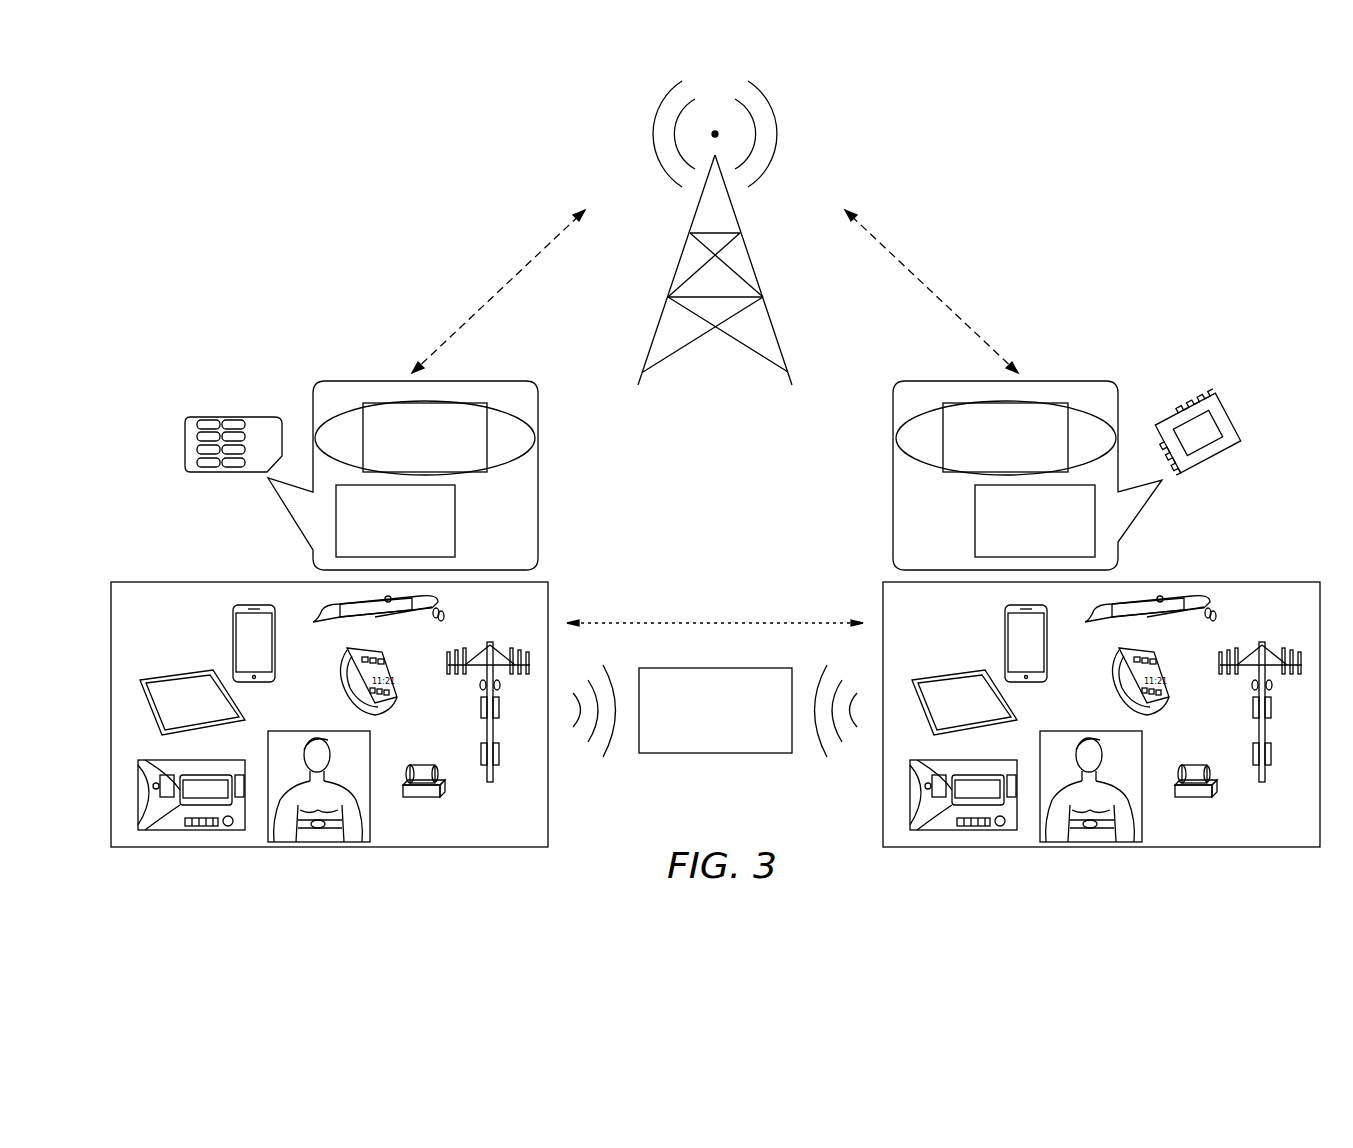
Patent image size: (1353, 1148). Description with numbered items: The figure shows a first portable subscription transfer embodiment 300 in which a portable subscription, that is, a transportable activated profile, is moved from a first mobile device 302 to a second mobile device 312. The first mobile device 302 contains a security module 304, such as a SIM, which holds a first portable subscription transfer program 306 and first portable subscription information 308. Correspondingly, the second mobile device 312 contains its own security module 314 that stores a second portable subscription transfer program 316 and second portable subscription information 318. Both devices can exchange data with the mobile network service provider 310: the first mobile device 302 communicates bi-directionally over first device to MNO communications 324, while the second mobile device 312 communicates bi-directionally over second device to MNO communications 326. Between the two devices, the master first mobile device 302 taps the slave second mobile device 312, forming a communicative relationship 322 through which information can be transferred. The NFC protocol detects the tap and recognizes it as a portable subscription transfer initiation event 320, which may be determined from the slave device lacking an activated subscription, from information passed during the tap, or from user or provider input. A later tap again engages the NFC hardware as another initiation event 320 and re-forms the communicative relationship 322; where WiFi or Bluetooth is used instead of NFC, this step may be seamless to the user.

The first portable subscription transfer embodiment 300 is at (1121, 146).
The first mobile device 302 is at (160, 582).
The security module 304 is at (228, 416).
The first portable subscription transfer program 306 is at (458, 478).
The first portable subscription information 308 is at (455, 536).
The mobile network service provider 310 is at (737, 210).
The second mobile device 312 is at (1210, 582).
The security module 314 is at (1213, 457).
The second portable subscription transfer program 316 is at (962, 478).
The second portable subscription information 318 is at (975, 538).
The portable subscription transfer initiation event 320 is at (715, 753).
The communicative relationship 322 is at (715, 622).
The first device to MNO communications 324 is at (497, 290).
The second device to MNO communications 326 is at (935, 290).